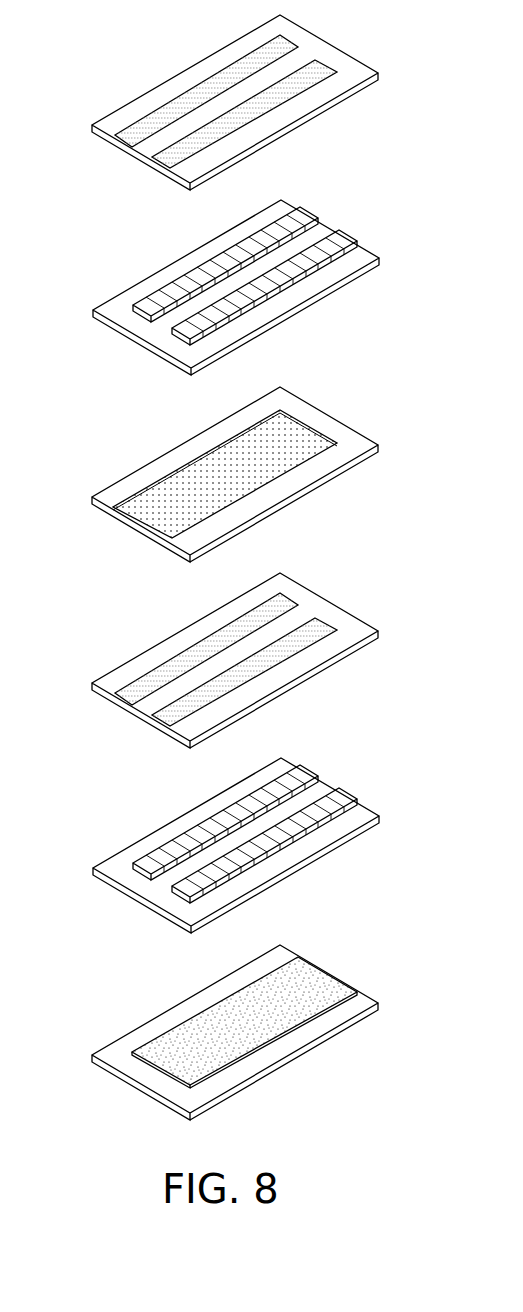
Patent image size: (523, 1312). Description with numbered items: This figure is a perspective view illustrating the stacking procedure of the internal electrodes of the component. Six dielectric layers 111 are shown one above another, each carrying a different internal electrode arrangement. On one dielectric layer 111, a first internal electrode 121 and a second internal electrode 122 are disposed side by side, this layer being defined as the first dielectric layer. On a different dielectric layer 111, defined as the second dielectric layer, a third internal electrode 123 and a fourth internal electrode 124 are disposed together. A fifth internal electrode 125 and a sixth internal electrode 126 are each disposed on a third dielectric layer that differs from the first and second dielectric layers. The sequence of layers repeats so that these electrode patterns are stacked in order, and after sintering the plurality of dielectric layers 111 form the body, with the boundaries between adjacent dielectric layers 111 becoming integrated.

The dielectric layer 111 is at (170, 90).
The first internal electrode 121 is at (123, 133).
The second internal electrode 122 is at (165, 153).
The third internal electrode 123 is at (347, 235).
The fourth internal electrode 124 is at (300, 213).
The fifth internal electrode 125 is at (145, 515).
The sixth internal electrode 126 is at (327, 980).